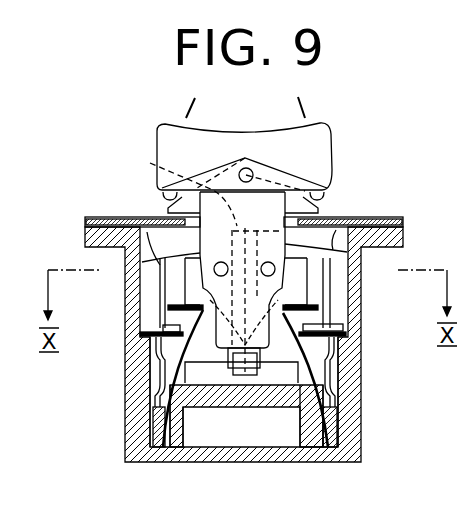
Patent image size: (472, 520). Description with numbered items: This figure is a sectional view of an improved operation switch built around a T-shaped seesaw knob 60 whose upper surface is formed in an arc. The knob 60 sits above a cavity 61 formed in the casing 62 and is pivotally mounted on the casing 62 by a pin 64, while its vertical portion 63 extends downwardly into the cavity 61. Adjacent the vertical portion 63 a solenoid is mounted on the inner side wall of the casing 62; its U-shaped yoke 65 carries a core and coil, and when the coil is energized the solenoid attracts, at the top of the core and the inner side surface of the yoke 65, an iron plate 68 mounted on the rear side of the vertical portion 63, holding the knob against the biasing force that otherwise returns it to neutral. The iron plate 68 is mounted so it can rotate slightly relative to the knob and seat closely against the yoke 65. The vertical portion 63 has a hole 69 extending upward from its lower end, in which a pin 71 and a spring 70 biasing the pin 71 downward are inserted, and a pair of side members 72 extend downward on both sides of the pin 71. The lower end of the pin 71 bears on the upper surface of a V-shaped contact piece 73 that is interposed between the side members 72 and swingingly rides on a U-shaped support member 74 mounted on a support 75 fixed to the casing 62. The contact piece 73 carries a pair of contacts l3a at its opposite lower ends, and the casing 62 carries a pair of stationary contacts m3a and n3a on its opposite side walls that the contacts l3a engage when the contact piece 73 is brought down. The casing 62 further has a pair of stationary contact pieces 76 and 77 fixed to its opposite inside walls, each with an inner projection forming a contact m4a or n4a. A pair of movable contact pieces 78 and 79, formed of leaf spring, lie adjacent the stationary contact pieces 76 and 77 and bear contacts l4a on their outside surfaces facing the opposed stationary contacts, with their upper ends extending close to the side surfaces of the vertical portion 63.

The seesaw knob 60 is at (320, 143).
The pin 64 is at (247, 168).
The hole 69 is at (162, 168).
The yoke 65 is at (153, 200).
The spring 70 is at (322, 240).
The cavity 61 is at (345, 222).
The casing 62 is at (362, 458).
The vertical portion 63 is at (300, 258).
The iron plate 68 is at (296, 280).
The V-shaped contact piece 73 is at (318, 307).
The contacts l3a is at (175, 314).
The stationary contact m3a is at (162, 334).
The stationary contact n3a is at (335, 334).
The contact m4a is at (157, 362).
The contact n4a is at (338, 362).
The contacts l4a is at (170, 442).
The pin 71 is at (218, 396).
The support 75 is at (186, 425).
The U-shaped support member 74 is at (260, 360).
The side members 72 is at (283, 402).
The movable contact piece 78 is at (157, 422).
The movable contact piece 79 is at (332, 410).
The stationary contact piece 76 is at (128, 399).
The stationary contact piece 77 is at (338, 393).